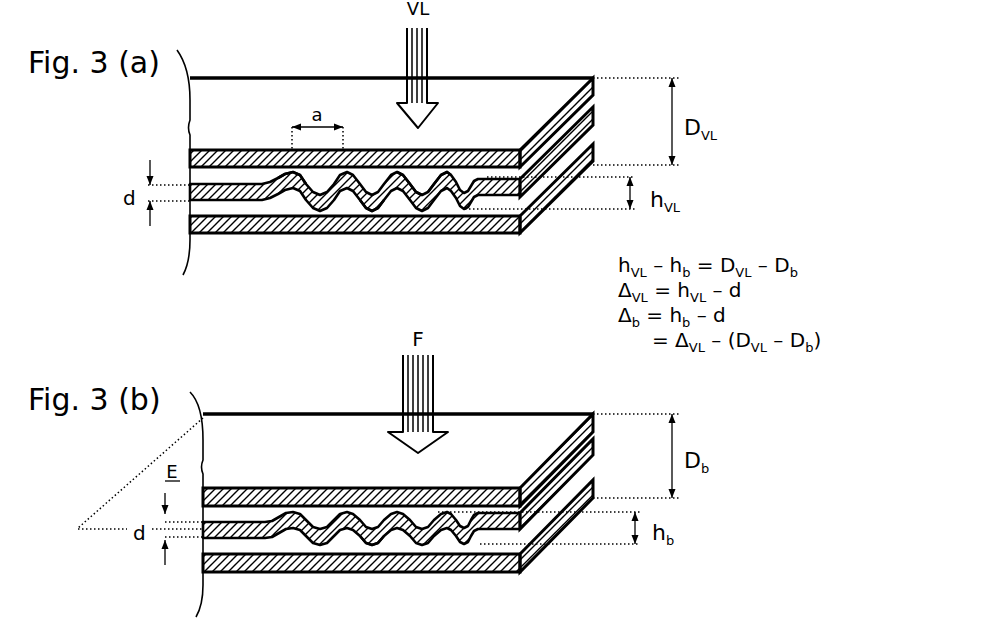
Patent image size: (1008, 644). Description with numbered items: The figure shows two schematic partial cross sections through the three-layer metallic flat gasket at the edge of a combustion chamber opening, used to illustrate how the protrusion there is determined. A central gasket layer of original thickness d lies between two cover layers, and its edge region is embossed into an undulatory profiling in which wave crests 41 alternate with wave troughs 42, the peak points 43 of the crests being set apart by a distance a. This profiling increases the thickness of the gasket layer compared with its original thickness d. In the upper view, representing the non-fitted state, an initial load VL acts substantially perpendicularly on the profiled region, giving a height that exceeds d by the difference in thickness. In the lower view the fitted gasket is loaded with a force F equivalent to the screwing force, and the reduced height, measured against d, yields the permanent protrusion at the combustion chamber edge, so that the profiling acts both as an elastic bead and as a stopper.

The wave crest 41 is at (352, 174).
The wave trough 42 is at (419, 192).
The peak point 43 is at (440, 184).